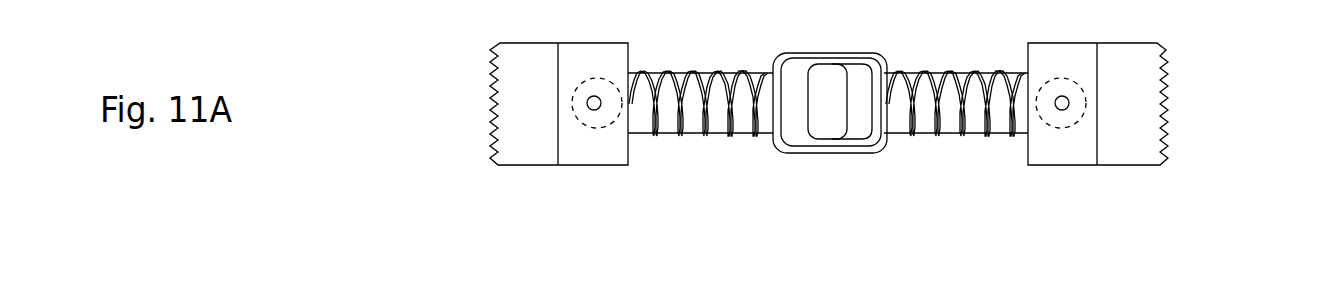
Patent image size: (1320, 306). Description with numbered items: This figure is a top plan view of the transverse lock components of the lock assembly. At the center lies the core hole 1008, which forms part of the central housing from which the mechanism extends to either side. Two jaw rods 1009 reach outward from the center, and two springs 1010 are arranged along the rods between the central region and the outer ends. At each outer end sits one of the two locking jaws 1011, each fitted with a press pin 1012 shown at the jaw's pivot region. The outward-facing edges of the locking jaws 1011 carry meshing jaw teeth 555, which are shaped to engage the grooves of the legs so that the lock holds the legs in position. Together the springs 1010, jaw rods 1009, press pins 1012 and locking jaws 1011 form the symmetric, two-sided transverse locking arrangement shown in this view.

The jaw teeth 555 is at (490, 115).
The core hole 1008 is at (833, 88).
The jaw rods 1009 is at (820, 147).
The spring 1010 is at (682, 133).
The locking jaw 1011 is at (615, 60).
The press pin 1012 is at (588, 97).